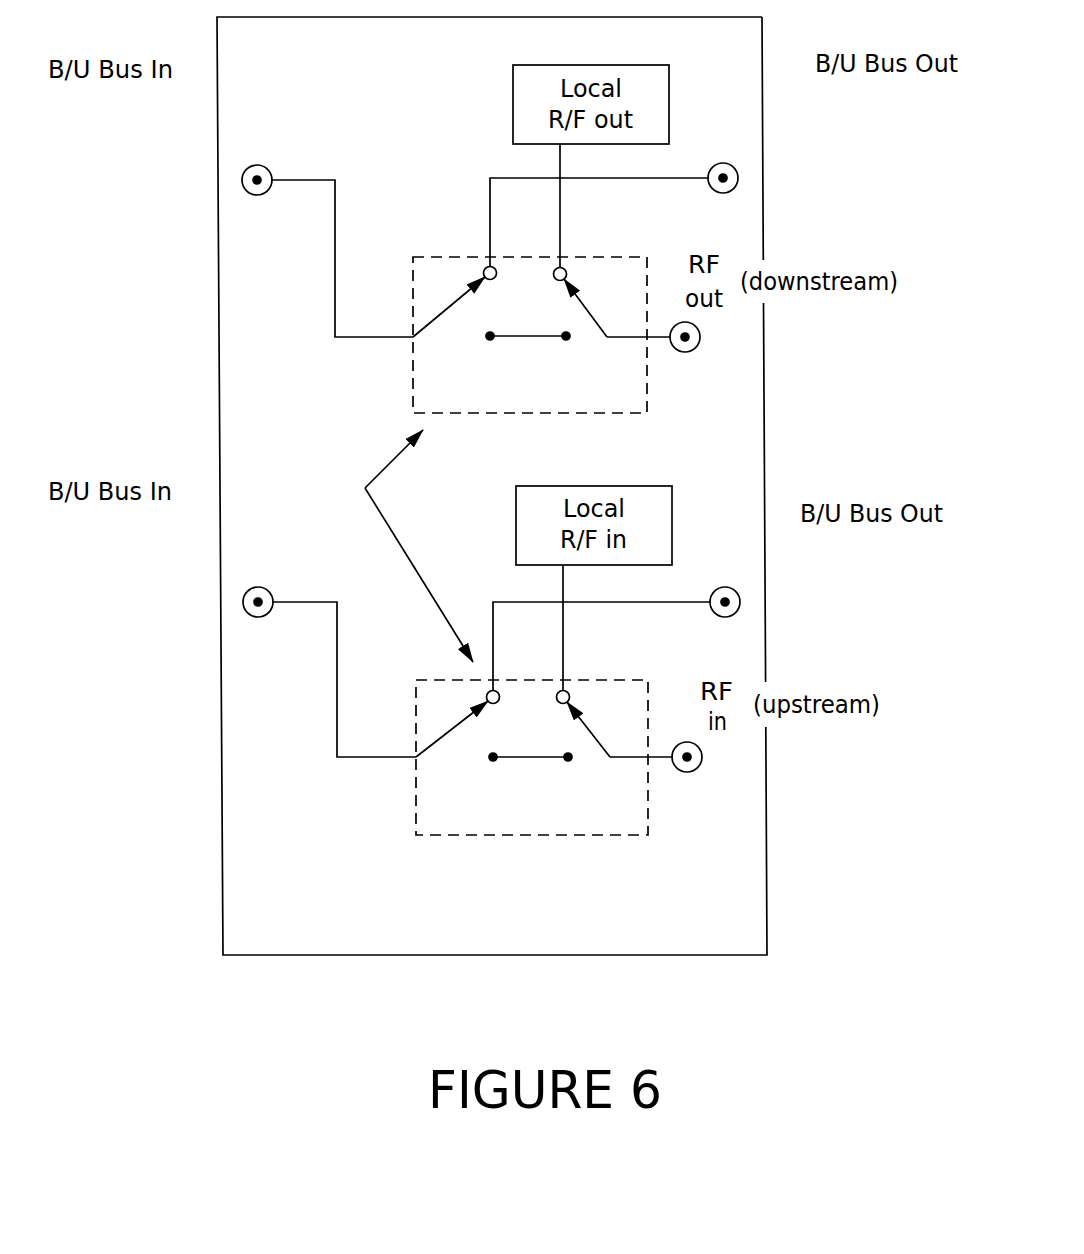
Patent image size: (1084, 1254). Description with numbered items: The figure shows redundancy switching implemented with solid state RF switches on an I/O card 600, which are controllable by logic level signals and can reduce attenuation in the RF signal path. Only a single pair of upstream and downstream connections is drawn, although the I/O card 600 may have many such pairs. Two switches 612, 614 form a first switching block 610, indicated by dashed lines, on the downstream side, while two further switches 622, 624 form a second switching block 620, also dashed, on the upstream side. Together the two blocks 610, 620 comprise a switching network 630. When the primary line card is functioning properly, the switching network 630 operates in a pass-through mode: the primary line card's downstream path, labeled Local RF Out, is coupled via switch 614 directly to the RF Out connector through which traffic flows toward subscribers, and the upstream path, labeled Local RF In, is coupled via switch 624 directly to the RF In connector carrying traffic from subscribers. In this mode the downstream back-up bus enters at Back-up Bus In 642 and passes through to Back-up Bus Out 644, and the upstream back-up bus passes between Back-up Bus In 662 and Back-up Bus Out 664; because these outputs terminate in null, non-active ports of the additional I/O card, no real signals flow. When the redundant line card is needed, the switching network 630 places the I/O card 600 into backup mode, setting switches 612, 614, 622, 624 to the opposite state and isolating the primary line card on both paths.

The I/O card 600 is at (633, 924).
The first switching block 610 is at (578, 358).
The switch 612 is at (528, 319).
The switch 614 is at (597, 341).
The second switching block 620 is at (532, 723).
The switch 622 is at (529, 741).
The switch 624 is at (601, 765).
The switching network 630 is at (395, 546).
The Back-up Bus In 642 is at (248, 169).
The Back-up Bus Out 644 is at (735, 166).
The Back-up Bus In 662 is at (250, 593).
The Back-up Bus Out 664 is at (738, 591).